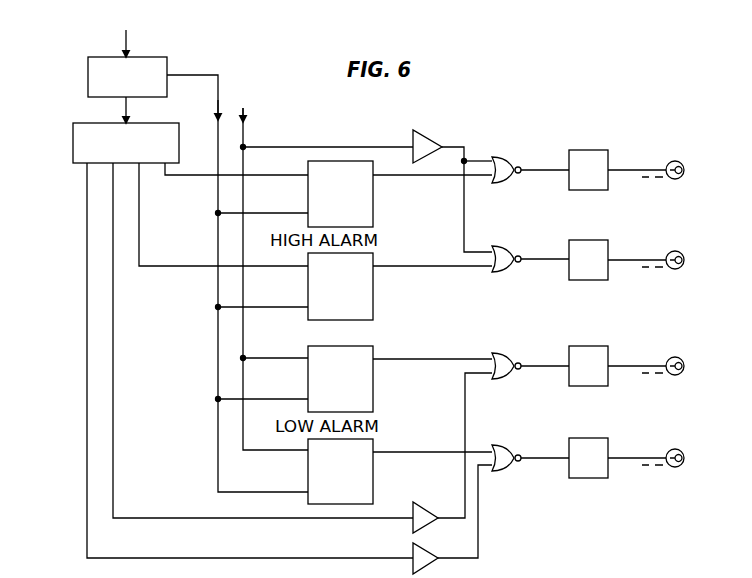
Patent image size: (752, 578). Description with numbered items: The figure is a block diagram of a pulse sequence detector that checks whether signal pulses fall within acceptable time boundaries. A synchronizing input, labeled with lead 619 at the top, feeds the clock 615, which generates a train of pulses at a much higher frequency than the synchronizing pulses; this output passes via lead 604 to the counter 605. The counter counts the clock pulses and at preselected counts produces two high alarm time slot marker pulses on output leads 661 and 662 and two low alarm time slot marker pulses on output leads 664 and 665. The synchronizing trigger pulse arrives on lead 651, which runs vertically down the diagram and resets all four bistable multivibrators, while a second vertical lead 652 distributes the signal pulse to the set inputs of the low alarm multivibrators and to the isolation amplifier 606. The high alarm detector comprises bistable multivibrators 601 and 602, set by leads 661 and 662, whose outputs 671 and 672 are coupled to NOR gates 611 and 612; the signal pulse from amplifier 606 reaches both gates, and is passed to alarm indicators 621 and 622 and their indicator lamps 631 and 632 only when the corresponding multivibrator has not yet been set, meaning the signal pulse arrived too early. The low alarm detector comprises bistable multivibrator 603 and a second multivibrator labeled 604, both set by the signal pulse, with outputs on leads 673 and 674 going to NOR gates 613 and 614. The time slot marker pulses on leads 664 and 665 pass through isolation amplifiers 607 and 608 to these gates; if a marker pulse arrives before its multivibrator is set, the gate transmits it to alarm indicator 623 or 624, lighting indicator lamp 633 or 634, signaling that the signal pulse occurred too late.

The sync input line 619 is at (130, 42).
The clock 615 is at (88, 78).
The lead 604 is at (126, 110).
The counter 605 is at (73, 143).
The lead 651 is at (218, 88).
The signal line 652 is at (243, 112).
The output lead 661 is at (174, 177).
The output lead 662 is at (158, 265).
The output lead 664 is at (115, 297).
The output lead 665 is at (87, 297).
The bistable multivibrator 601 is at (373, 212).
The bistable multivibrator 602 is at (373, 304).
The bistable multivibrator 603 is at (373, 386).
The output lead 671 is at (424, 177).
The output lead 672 is at (409, 253).
The lead 673 is at (405, 358).
The lead 674 is at (406, 452).
The isolation amplifier 606 is at (427, 131).
The isolation amplifier 607 is at (434, 494).
The isolation amplifier 608 is at (427, 546).
The NOR gate 611 is at (530, 163).
The NOR gate 612 is at (530, 252).
The NOR gate 613 is at (530, 358).
The NOR gate 614 is at (530, 450).
The alarm indicator 621 is at (588, 150).
The alarm indicator 622 is at (588, 240).
The alarm indicator 623 is at (588, 346).
The alarm indicator 624 is at (588, 438).
The indicator lamp 631 is at (666, 162).
The indicator lamp 632 is at (667, 252).
The indicator lamp 633 is at (667, 357).
The indicator lamp 634 is at (667, 449).